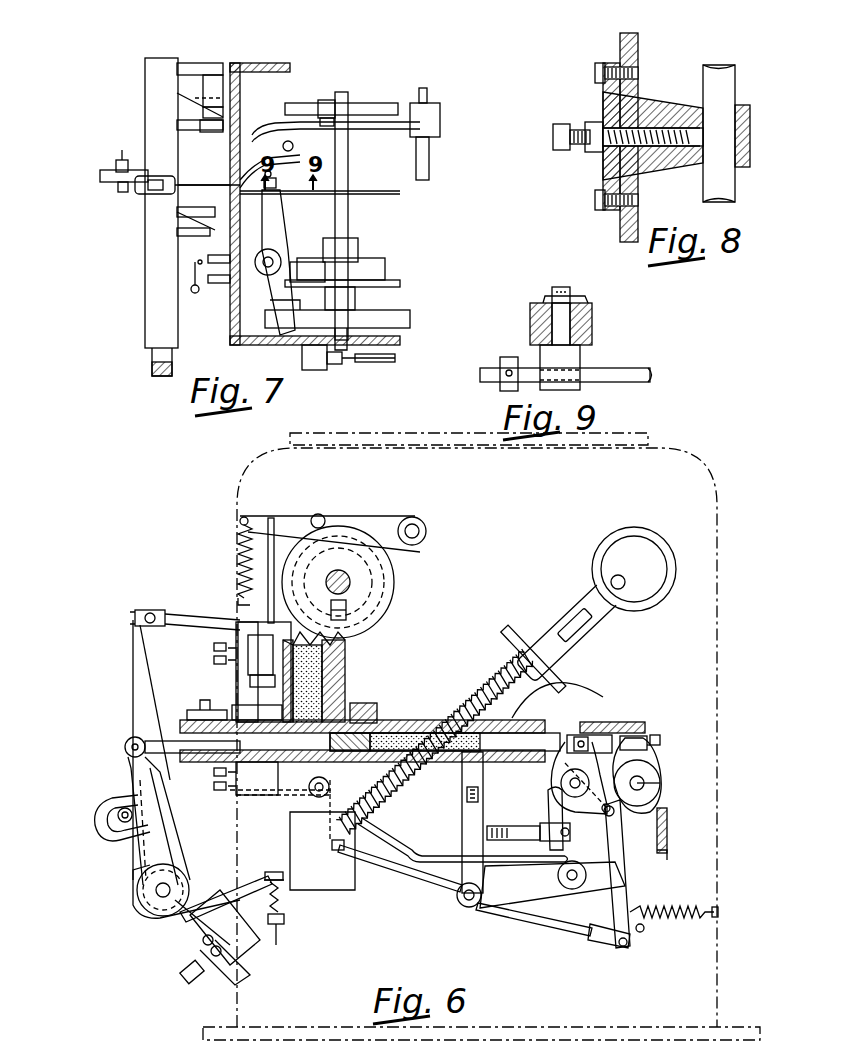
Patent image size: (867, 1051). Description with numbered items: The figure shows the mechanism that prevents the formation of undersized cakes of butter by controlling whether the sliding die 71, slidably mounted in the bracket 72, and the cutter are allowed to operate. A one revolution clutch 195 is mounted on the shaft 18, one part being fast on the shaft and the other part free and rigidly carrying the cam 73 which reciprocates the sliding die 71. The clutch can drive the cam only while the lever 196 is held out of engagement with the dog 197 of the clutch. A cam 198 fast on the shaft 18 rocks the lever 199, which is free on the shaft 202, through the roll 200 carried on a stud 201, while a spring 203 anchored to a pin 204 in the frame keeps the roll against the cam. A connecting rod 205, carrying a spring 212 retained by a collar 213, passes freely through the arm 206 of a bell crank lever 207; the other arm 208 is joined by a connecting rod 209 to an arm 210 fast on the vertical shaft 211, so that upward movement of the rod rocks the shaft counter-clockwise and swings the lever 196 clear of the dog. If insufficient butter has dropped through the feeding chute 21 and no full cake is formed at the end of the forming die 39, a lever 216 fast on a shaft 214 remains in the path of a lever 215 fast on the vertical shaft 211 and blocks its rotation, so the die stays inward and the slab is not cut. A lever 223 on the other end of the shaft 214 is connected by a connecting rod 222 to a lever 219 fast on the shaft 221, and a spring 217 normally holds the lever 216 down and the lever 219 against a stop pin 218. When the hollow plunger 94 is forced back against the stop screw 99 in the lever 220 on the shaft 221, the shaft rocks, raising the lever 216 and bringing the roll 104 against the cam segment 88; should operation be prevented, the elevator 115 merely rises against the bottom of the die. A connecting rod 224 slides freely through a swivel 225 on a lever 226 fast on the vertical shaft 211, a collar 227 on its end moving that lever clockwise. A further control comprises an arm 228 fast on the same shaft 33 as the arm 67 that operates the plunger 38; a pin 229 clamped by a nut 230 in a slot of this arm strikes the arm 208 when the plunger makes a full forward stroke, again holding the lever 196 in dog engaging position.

In FIG. 7, the shaft 18 is at (348, 205).
In FIG. 6, the feeding chute 21 is at (370, 682).
In FIG. 7, the shaft 33 is at (150, 355).
In FIG. 6, the shaft 33 is at (163, 890).
In FIG. 6, the plunger 38 is at (375, 718).
In FIG. 6, the forming die 39 is at (488, 774).
In FIG. 6, the arm 67 is at (138, 890).
In FIG. 6, the sliding die 71 is at (572, 736).
In FIG. 6, the bracket 72 is at (585, 623).
In FIG. 7, the cam 73 is at (410, 325).
In FIG. 6, the cam 73 is at (394, 582).
In FIG. 6, the cam segment 88 is at (668, 836).
In FIG. 6, the hollow plunger 94 is at (620, 745).
In FIG. 6, the stop screw 99 is at (660, 745).
In FIG. 6, the cam roll 104 is at (600, 938).
In FIG. 6, the elevator 115 is at (462, 805).
In FIG. 7, the one revolution clutch 195 is at (385, 272).
In FIG. 7, the lever 196 is at (365, 228).
In FIG. 6, the lever 196 is at (275, 620).
In FIG. 7, the dog 197 is at (400, 283).
In FIG. 6, the dog 197 is at (350, 610).
In FIG. 7, the cam 198 is at (375, 103).
In FIG. 6, the cam 198 is at (395, 575).
In FIG. 7, the lever 199 is at (440, 118).
In FIG. 6, the lever 199 is at (415, 517).
In FIG. 7, the roll 200 is at (327, 100).
In FIG. 6, the roll 200 is at (322, 515).
In FIG. 7, the stud 201 is at (355, 145).
In FIG. 7, the shaft 202 is at (426, 88).
In FIG. 6, the spring 203 is at (244, 521).
In FIG. 6, the pin 204 is at (238, 605).
In FIG. 6, the connecting rod 205 is at (280, 545).
In FIG. 7, the arm 206 is at (265, 165).
In FIG. 6, the arm 206 is at (190, 945).
In FIG. 7, the bell crank lever 207 is at (178, 190).
In FIG. 6, the arm 208 is at (133, 690).
In FIG. 6, the connecting rod 209 is at (155, 628).
In FIG. 7, the arm 210 is at (255, 235).
In FIG. 8, the vertical shaft 211 is at (703, 84).
In FIG. 6, the vertical shaft 211 is at (250, 682).
In FIG. 6, the spring 212 is at (285, 905).
In FIG. 6, the collar 213 is at (278, 928).
In FIG. 6, the shaft 214 is at (312, 797).
In FIG. 7, the lever 215 is at (235, 300).
In FIG. 7, the lever 216 is at (275, 350).
In FIG. 6, the lever 216 is at (300, 790).
In FIG. 6, the spring 217 is at (672, 920).
In FIG. 6, the stop pin 218 is at (640, 932).
In FIG. 6, the lever 219 is at (628, 894).
In FIG. 6, the lever 220 is at (660, 742).
In FIG. 6, the shaft 221 is at (660, 783).
In FIG. 6, the connecting rod 222 is at (520, 920).
In FIG. 6, the lever 223 is at (395, 862).
In FIG. 7, the connecting rod 224 is at (280, 202).
In FIG. 9, the connecting rod 224 is at (675, 355).
In FIG. 6, the connecting rod 224 is at (450, 870).
In FIG. 9, the swivel 225 is at (565, 312).
In FIG. 7, the lever 226 is at (380, 183).
In FIG. 9, the lever 226 is at (592, 318).
In FIG. 9, the collar 227 is at (505, 358).
In FIG. 6, the arm 228 is at (108, 835).
In FIG. 7, the pin 229 is at (135, 188).
In FIG. 6, the pin 229 is at (130, 820).
In FIG. 7, the nut 230 is at (120, 158).